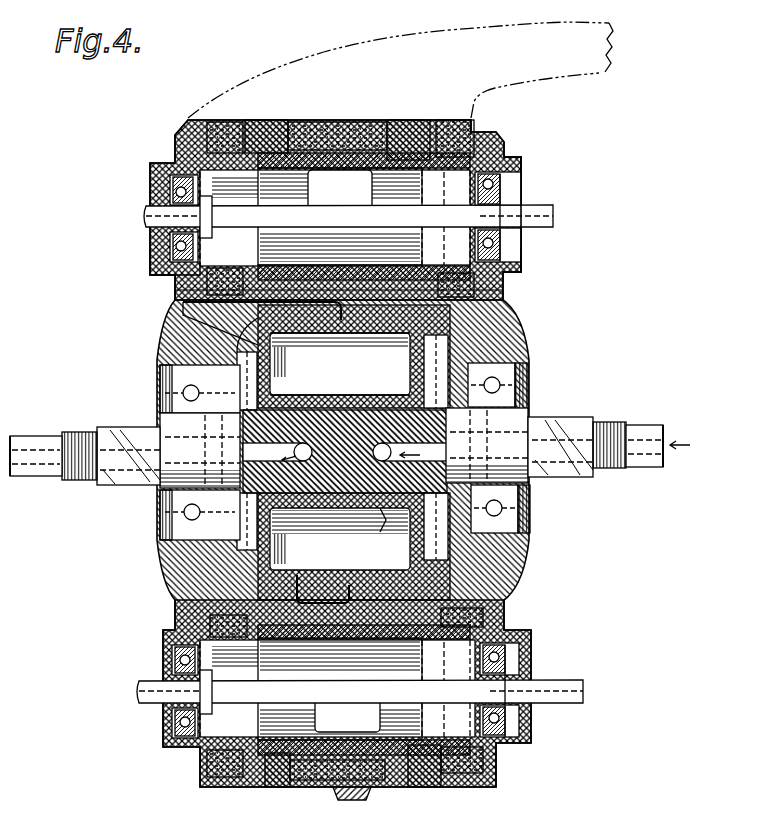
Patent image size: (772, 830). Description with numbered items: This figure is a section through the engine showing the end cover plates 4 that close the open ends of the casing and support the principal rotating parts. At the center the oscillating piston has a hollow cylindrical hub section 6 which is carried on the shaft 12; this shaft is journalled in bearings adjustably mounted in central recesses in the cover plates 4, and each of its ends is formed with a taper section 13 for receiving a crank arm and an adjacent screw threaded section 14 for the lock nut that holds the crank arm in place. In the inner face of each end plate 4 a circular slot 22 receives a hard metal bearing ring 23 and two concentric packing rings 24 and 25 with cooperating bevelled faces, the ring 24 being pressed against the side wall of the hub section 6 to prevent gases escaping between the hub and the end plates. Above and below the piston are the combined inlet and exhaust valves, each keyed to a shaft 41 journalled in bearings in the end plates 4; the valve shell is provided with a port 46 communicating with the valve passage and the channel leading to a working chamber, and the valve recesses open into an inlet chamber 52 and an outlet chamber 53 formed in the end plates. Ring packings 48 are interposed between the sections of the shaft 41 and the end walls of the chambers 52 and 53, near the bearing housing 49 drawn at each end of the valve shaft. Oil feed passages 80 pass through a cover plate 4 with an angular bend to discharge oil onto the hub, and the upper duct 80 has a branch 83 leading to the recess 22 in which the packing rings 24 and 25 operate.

The cover plate 4 is at (185, 578).
The hub section 6 is at (352, 338).
The shaft 12 is at (170, 503).
The taper section 13 is at (120, 428).
The screw threaded section 14 is at (82, 430).
The circular slot 22 is at (510, 322).
The bearing ring 23 is at (512, 298).
The packing ring 24 is at (340, 349).
The packing ring 25 is at (340, 380).
The shaft 41 is at (335, 216).
The port 46 is at (374, 212).
The ring packing 48 is at (165, 222).
The bearing housing 49 is at (155, 187).
The inlet chamber 52 is at (466, 168).
The outlet chamber 53 is at (182, 152).
The oil feed passage 80 is at (185, 306).
The branch 83 is at (180, 318).